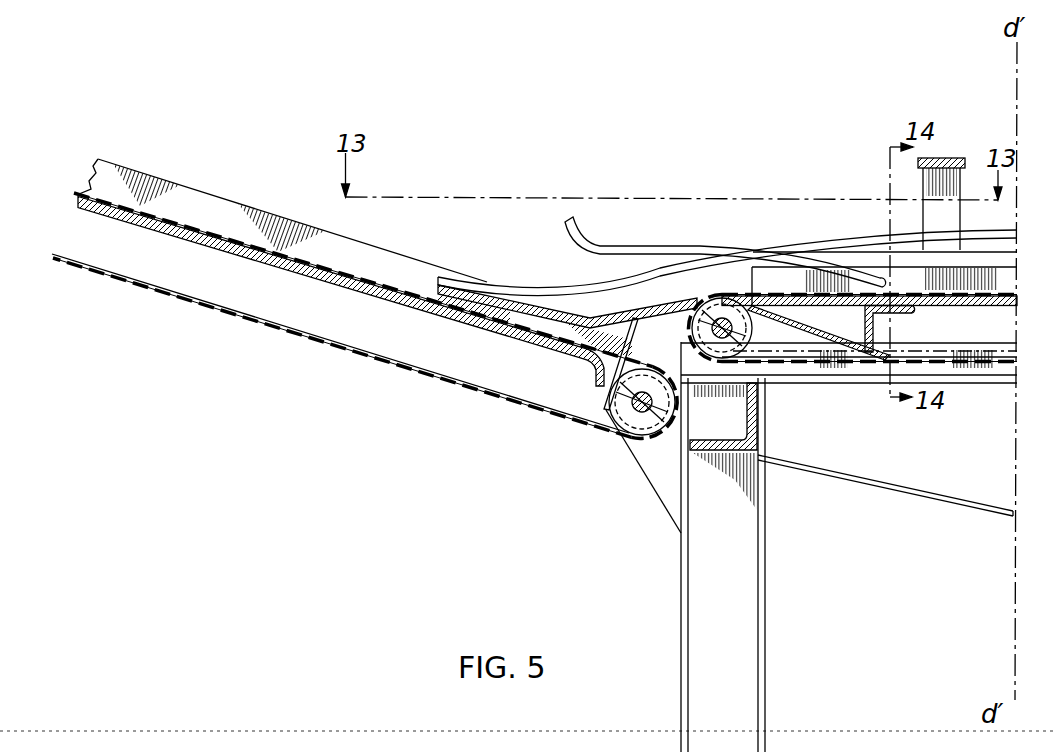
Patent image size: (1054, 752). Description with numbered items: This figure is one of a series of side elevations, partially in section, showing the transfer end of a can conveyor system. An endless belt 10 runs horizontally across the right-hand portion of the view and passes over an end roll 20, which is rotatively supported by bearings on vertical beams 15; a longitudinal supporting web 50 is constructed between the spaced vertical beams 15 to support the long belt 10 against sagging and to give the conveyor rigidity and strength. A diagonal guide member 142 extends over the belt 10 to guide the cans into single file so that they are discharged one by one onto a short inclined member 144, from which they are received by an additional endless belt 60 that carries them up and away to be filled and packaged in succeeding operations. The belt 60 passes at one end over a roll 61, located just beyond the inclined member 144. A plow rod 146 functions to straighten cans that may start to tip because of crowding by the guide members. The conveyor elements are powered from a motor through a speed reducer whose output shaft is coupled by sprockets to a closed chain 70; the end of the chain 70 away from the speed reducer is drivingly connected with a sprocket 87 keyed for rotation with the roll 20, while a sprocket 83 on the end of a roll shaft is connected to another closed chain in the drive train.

The endless belt 10 is at (927, 307).
The vertical beam 15 is at (745, 583).
The end roll 20 is at (748, 330).
The longitudinal supporting web 50 is at (963, 307).
The additional endless belt 60 is at (409, 306).
The roll 61 is at (677, 413).
The closed chain 70 is at (895, 489).
The sprocket 83 is at (606, 392).
The sprocket 87 is at (733, 350).
The diagonal guide member 142 is at (972, 256).
The short inclined member 144 is at (596, 318).
The plow rod 146 is at (600, 243).